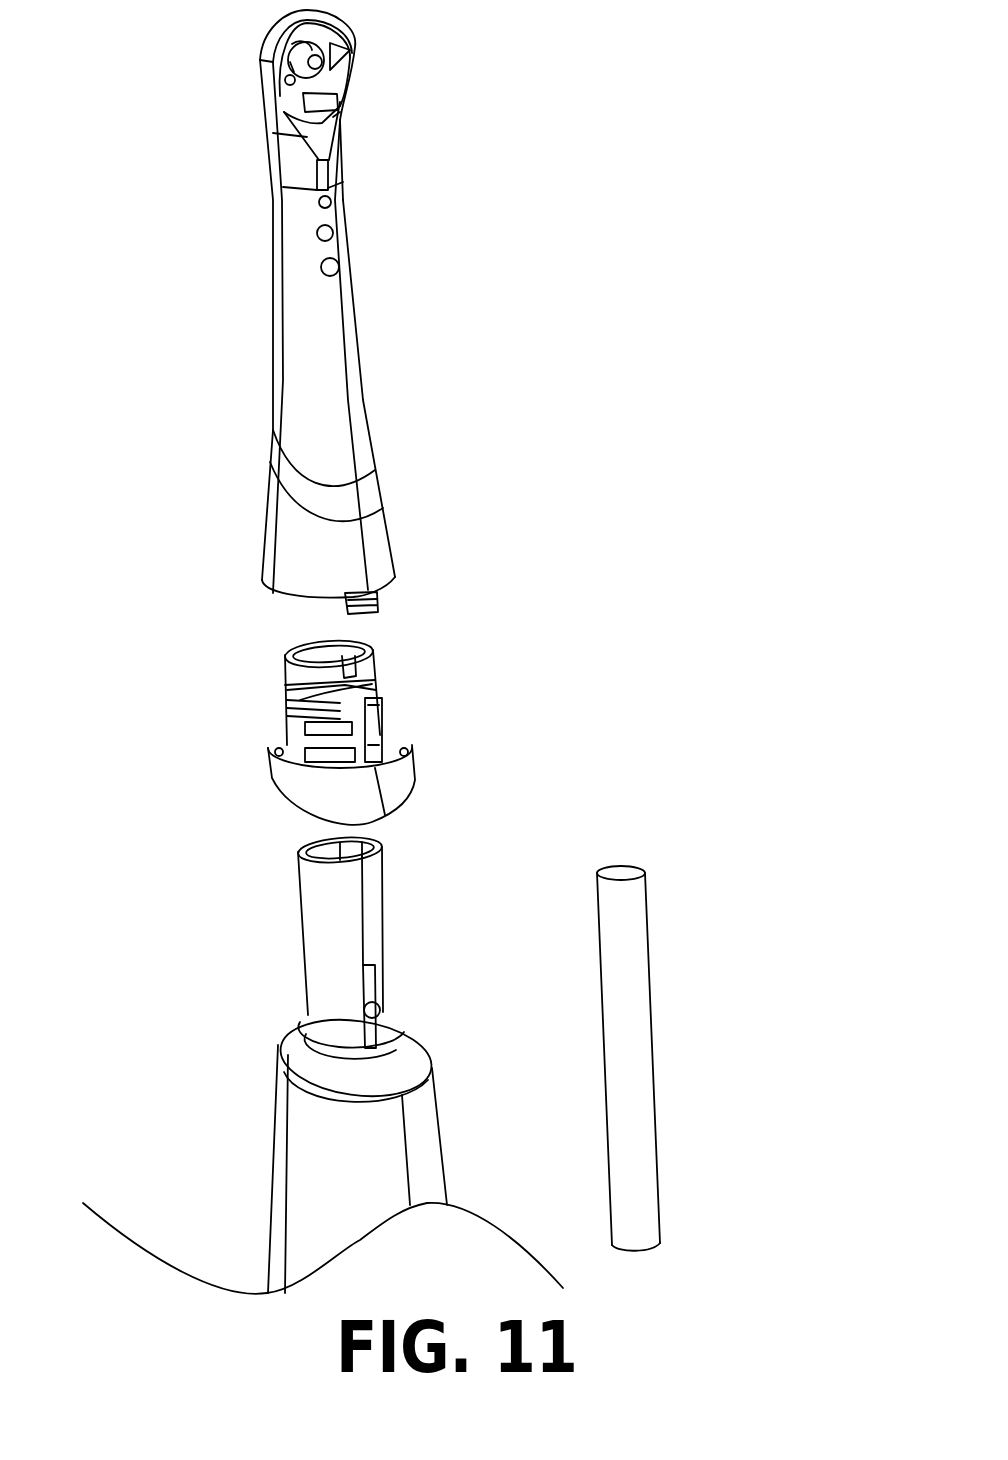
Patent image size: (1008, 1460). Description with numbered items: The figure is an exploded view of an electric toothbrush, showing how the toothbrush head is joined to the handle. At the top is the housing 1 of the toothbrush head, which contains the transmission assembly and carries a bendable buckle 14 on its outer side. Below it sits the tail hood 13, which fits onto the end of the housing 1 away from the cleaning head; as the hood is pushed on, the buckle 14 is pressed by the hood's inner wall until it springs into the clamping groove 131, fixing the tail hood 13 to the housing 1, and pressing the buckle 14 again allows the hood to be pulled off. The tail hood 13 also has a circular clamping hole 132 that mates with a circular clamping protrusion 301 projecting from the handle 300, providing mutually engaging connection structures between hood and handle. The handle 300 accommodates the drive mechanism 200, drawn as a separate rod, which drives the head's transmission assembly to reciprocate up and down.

The housing 1 is at (347, 398).
The tail hood 13 is at (268, 768).
The clamping groove 131 is at (388, 728).
The clamping hole 132 is at (285, 685).
The buckle 14 is at (378, 603).
The drive mechanism 200 is at (625, 983).
The handle 300 is at (325, 1142).
The clamping protrusion 301 is at (365, 1008).